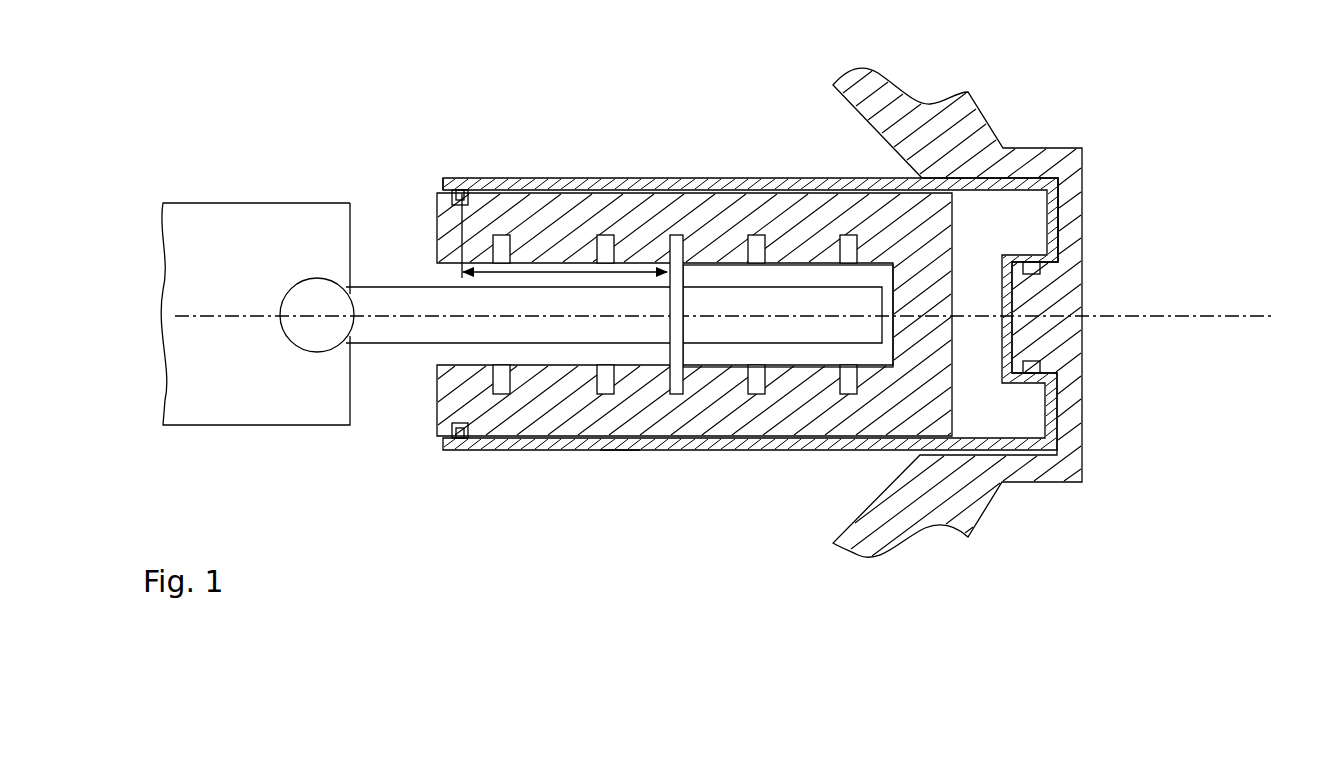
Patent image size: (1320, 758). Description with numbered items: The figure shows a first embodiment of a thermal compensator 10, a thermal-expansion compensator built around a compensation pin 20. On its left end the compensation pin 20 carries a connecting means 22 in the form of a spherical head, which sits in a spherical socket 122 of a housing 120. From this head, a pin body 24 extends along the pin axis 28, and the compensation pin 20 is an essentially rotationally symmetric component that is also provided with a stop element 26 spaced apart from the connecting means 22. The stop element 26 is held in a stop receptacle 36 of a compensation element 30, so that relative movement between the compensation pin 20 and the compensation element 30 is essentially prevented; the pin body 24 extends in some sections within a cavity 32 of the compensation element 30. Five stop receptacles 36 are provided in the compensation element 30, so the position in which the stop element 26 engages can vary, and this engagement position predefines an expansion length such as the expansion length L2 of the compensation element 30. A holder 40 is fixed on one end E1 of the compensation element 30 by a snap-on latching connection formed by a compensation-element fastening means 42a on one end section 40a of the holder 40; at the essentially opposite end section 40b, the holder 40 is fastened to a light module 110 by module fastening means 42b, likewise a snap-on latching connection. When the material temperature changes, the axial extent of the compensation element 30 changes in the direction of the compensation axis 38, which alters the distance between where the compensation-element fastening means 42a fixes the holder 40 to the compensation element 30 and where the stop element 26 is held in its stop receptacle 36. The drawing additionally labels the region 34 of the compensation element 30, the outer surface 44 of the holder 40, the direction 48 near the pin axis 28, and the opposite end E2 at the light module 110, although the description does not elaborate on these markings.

The thermal compensator 10 is at (682, 290).
The compensation pin 20 is at (586, 305).
The connecting means 22 is at (334, 296).
The pin body 24 is at (438, 303).
The stop element 26 is at (676, 382).
The pin axis 28 is at (1163, 316).
The compensation element 30 is at (757, 210).
The cavity 32 is at (500, 354).
The second housing end 34 is at (780, 424).
The stop receptacle 36 is at (505, 234).
The compensation axis 38 is at (1210, 316).
The holder 40 is at (796, 299).
The end section of the holder 40a is at (456, 184).
The end section of the holder 40b is at (1035, 252).
The compensation-element fastening means 42a is at (462, 190).
The module fastening means 42b is at (1018, 262).
The outer surface of sleeve 44 is at (618, 449).
The direction 48 is at (1225, 320).
The light module 110 is at (975, 130).
The housing 120 is at (265, 206).
The spherical socket 122 is at (333, 296).
The end of the compensation element E1 is at (473, 395).
The second plane E2 is at (925, 402).
The expansion length L2 is at (564, 244).